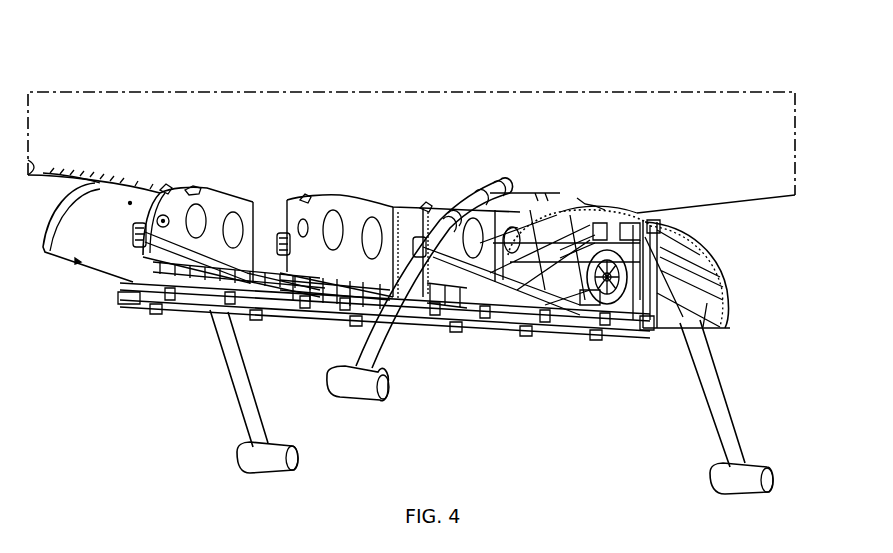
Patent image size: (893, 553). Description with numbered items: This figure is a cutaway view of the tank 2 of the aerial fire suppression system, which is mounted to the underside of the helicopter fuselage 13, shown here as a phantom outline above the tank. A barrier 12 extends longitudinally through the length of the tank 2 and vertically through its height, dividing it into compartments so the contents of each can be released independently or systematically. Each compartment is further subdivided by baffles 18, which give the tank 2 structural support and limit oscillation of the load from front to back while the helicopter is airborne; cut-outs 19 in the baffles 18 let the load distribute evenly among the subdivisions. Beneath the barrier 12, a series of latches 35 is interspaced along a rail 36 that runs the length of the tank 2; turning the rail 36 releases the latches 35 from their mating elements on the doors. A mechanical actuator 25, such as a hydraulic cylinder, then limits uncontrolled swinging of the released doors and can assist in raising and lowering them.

The tank 2 is at (727, 278).
The barrier 12 is at (275, 212).
The helicopter fuselage 13 is at (673, 112).
The baffles 18 is at (213, 187).
The cut-outs 19 is at (190, 190).
The mechanical actuator 25 is at (673, 303).
The latches 35 is at (453, 325).
The rail 36 is at (513, 332).